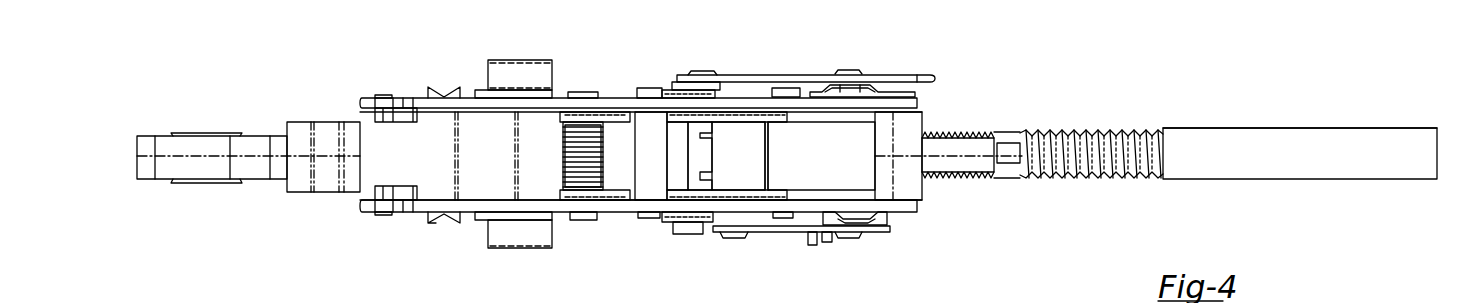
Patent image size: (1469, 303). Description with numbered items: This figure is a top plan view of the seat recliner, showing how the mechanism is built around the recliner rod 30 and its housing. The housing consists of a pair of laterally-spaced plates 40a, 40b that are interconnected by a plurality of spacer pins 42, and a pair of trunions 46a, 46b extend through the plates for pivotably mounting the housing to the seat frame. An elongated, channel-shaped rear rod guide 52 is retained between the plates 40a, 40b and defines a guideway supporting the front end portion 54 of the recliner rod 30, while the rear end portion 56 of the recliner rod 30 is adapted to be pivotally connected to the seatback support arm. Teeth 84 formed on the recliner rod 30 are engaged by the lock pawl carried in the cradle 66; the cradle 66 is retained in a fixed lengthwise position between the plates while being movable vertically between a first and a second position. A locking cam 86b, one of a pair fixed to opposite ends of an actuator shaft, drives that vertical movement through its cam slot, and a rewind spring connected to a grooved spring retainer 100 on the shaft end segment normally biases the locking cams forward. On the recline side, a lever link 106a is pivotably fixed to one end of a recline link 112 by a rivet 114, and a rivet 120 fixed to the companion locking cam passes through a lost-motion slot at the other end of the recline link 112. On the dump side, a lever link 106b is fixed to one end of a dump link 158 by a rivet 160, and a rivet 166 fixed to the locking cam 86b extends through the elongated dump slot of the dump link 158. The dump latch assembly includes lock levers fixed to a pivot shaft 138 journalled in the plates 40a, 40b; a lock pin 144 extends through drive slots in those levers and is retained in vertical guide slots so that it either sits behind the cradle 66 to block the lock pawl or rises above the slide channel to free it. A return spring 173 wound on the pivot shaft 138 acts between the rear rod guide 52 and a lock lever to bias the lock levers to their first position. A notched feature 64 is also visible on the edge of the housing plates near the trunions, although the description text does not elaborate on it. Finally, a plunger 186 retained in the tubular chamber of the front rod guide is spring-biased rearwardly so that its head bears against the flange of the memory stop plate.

The recliner rod 30 is at (1226, 128).
The plate 40a is at (915, 205).
The plate 40b is at (915, 103).
The spacer pin 42 is at (645, 178).
The trunion 46a is at (520, 238).
The trunion 46b is at (520, 60).
The rear rod guide 52 is at (357, 140).
The front end portion 54 is at (1310, 147).
The rear end portion 56 is at (190, 147).
The notch 64 is at (455, 223).
The cradle 66 is at (832, 166).
The teeth 84 is at (1063, 165).
The locking cam 86b is at (915, 90).
The spring retainer 100 is at (813, 245).
The lever link 106a is at (667, 225).
The lever link 106b is at (670, 87).
The recline link 112 is at (765, 232).
The rivet 114 is at (730, 238).
The rivet 120 is at (855, 238).
The pivot shaft 138 is at (573, 215).
The lock pin 144 is at (748, 164).
The dump link 158 is at (900, 77).
The rivet 160 is at (707, 71).
The rivet 166 is at (850, 70).
The return spring 173 is at (602, 147).
The plunger 186 is at (1010, 143).